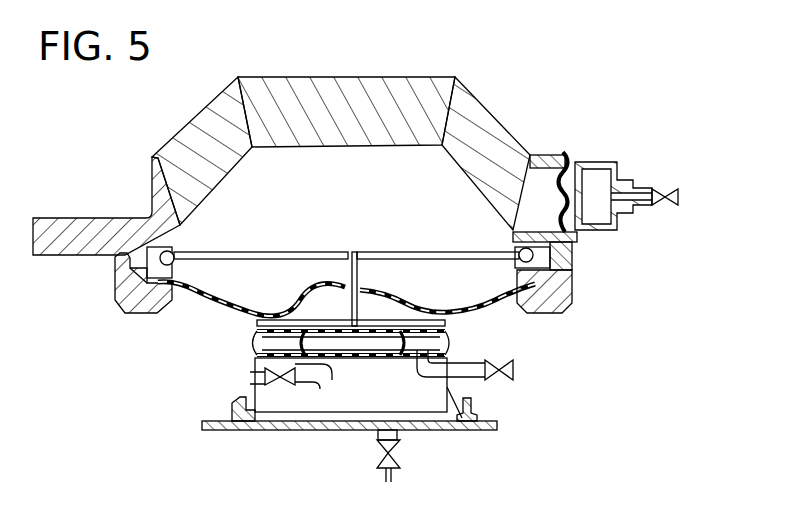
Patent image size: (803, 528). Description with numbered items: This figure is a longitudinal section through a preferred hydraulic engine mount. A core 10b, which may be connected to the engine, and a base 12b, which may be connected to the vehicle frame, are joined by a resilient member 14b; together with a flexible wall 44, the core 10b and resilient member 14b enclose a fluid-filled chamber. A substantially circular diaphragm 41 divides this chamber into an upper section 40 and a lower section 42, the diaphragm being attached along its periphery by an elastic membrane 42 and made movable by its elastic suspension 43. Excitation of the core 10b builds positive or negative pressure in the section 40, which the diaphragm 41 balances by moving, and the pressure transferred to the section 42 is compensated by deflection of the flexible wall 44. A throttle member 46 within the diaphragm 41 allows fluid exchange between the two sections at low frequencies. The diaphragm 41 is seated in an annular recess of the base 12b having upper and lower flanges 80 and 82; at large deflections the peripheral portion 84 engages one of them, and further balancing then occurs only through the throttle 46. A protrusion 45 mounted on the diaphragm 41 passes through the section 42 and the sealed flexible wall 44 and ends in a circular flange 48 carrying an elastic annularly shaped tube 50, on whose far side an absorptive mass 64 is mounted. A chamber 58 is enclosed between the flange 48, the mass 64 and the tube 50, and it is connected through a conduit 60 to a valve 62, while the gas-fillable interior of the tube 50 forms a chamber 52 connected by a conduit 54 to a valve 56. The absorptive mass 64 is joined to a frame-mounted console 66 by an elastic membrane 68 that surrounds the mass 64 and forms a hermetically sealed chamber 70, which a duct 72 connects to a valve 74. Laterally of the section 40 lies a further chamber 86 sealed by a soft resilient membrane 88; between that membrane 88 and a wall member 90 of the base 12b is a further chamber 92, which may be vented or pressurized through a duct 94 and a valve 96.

The core 10b is at (436, 92).
The resilient member 14b is at (192, 146).
The base 12b is at (56, 256).
The chamber section 40 is at (246, 223).
The diaphragm 41 is at (275, 250).
The chamber section / elastic membrane 42 is at (246, 298).
The elastic suspension 43 is at (180, 251).
The flexible wall 44 is at (228, 312).
The protrusion 45 is at (344, 285).
The throttle member 46 is at (384, 251).
The flange 48 is at (390, 305).
The elastic annularly shaped tube 50 is at (449, 334).
The chamber 52 is at (445, 414).
The conduit 54 is at (472, 367).
The valve 56 is at (514, 370).
The chamber 58 is at (347, 352).
The conduit 60 is at (319, 385).
The valve 62 is at (256, 388).
The absorptive mass 64 is at (441, 415).
The console 66 is at (498, 430).
The elastic membrane 68 is at (474, 404).
The hermetically sealed chamber 70 is at (366, 431).
The duct 72 is at (388, 421).
The valve 74 is at (389, 482).
The flange 80 is at (573, 293).
The flange 82 is at (566, 256).
The peripheral portion 84 is at (519, 251).
The further chamber 86 is at (547, 165).
The soft resilient membrane 88 is at (589, 162).
The wall member 90 is at (628, 176).
The further chamber 92 is at (623, 215).
The duct 94 is at (662, 190).
The valve 96 is at (678, 203).